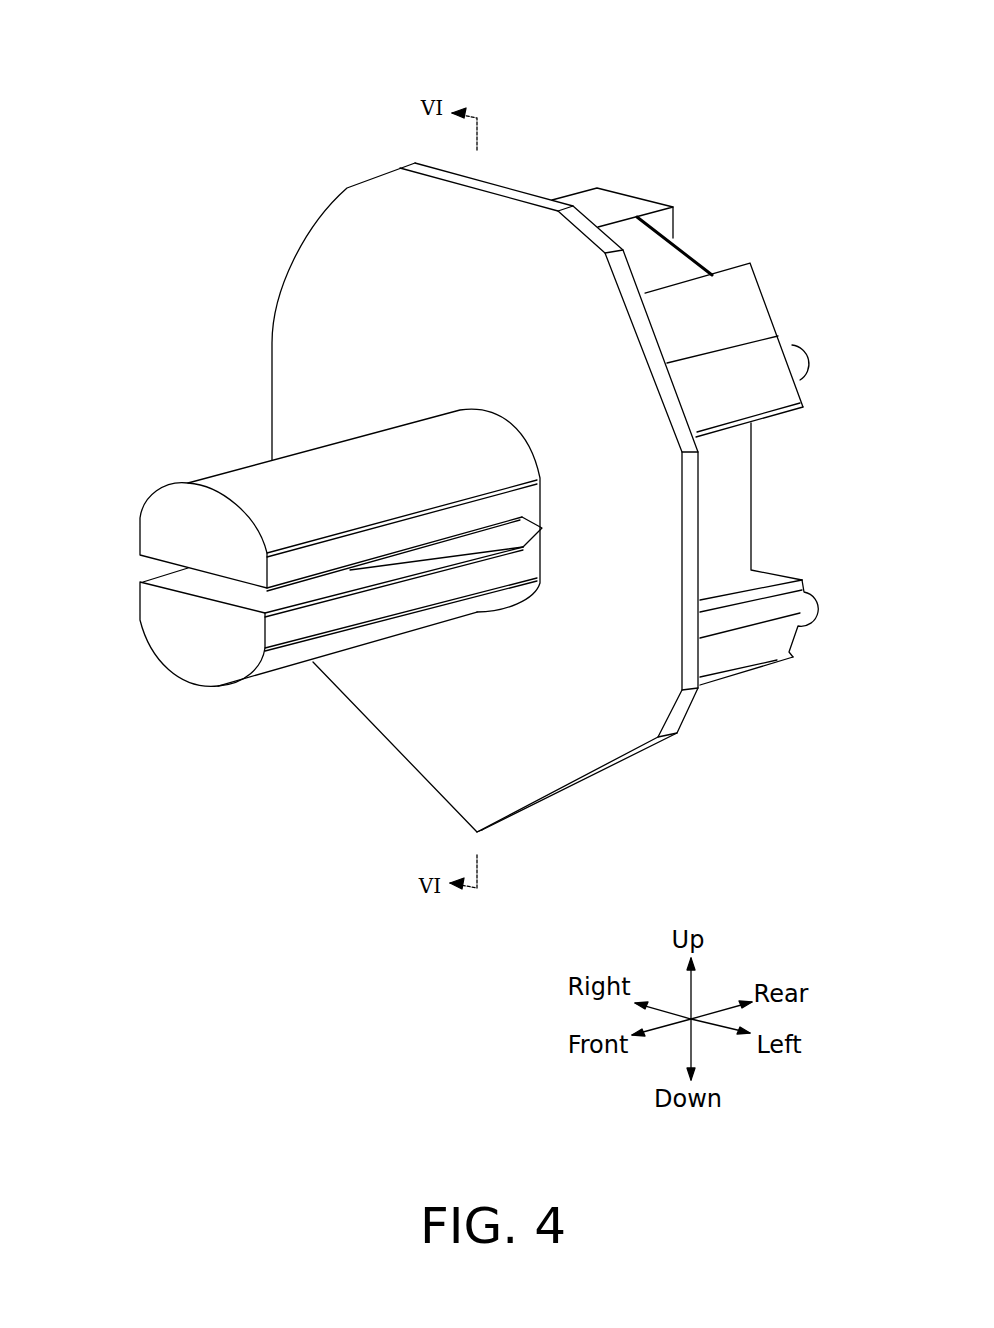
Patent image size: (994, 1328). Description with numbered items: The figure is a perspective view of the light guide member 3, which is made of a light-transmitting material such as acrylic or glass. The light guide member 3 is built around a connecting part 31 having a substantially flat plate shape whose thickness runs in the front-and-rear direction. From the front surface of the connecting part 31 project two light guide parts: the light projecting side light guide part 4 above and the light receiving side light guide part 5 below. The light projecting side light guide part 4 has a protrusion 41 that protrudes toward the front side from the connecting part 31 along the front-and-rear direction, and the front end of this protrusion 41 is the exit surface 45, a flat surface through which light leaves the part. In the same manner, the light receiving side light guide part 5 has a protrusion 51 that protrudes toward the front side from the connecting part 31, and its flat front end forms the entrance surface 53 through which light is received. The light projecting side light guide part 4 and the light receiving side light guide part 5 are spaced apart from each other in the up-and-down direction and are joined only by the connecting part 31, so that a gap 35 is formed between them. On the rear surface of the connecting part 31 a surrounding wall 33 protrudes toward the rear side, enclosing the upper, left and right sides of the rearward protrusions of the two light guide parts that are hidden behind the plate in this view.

The light guide member 3 is at (335, 98).
The connecting part 31 is at (320, 230).
The surrounding wall 33 is at (612, 203).
The light projecting side light guide part 4 is at (230, 462).
The protrusion 41 is at (350, 462).
The exit surface 45 is at (170, 512).
The gap 35 is at (155, 568).
The light receiving side light guide part 5 is at (270, 667).
The protrusion 51 is at (370, 650).
The entrance surface 53 is at (190, 657).